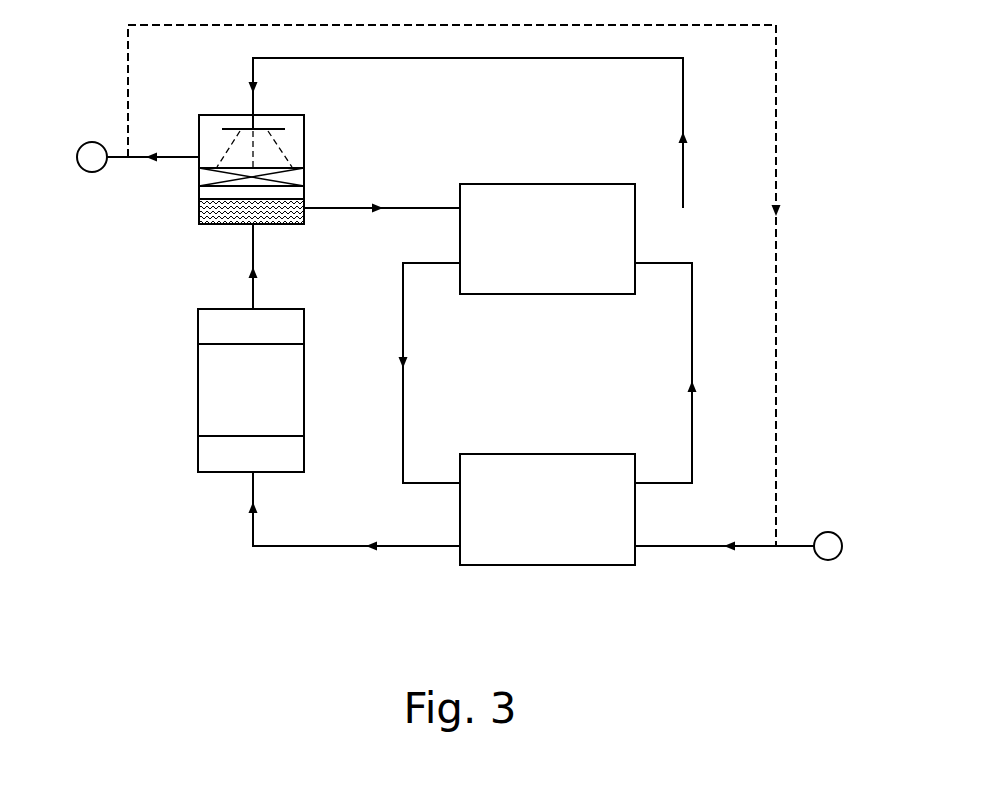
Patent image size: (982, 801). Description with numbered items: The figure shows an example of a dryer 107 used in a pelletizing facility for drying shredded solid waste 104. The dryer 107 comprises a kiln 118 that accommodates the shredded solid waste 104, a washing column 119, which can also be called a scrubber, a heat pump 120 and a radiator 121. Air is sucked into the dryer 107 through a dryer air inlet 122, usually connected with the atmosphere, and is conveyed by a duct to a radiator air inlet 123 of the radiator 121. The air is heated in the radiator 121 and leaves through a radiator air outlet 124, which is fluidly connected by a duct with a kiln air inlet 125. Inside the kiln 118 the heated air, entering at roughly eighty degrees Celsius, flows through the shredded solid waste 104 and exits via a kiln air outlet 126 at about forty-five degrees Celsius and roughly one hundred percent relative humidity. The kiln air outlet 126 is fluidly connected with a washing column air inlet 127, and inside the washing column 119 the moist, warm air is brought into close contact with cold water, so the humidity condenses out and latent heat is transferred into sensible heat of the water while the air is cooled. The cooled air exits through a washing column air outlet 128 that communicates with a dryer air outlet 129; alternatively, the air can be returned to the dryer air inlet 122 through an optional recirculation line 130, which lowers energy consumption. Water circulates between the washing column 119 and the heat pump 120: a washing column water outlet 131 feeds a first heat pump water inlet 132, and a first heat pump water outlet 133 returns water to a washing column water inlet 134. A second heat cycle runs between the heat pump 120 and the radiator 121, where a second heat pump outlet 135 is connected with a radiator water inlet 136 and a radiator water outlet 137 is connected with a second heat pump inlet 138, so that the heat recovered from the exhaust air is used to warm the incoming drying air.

The shredded solid waste 104 is at (210, 373).
The dryer 107 is at (203, 503).
The kiln 118 is at (210, 320).
The washing column 119 is at (213, 128).
The heat pump 120 is at (551, 197).
The radiator 121 is at (563, 553).
The dryer air inlet 122 is at (828, 532).
The radiator air inlet 123 is at (637, 550).
The radiator air outlet 124 is at (458, 550).
The kiln air inlet 125 is at (253, 473).
The kiln air outlet 126 is at (253, 303).
The washing column air inlet 127 is at (253, 226).
The washing column air outlet 128 is at (197, 160).
The dryer air outlet 129 is at (92, 172).
The recirculation line 130 is at (776, 88).
The washing column water outlet 131 is at (305, 205).
The first heat pump water inlet 132 is at (458, 206).
The first heat pump water outlet 133 is at (637, 206).
The washing column water inlet 134 is at (256, 106).
The second heat pump outlet 135 is at (458, 268).
The radiator water inlet 136 is at (458, 481).
The radiator water outlet 137 is at (637, 481).
The second heat pump inlet 138 is at (637, 268).